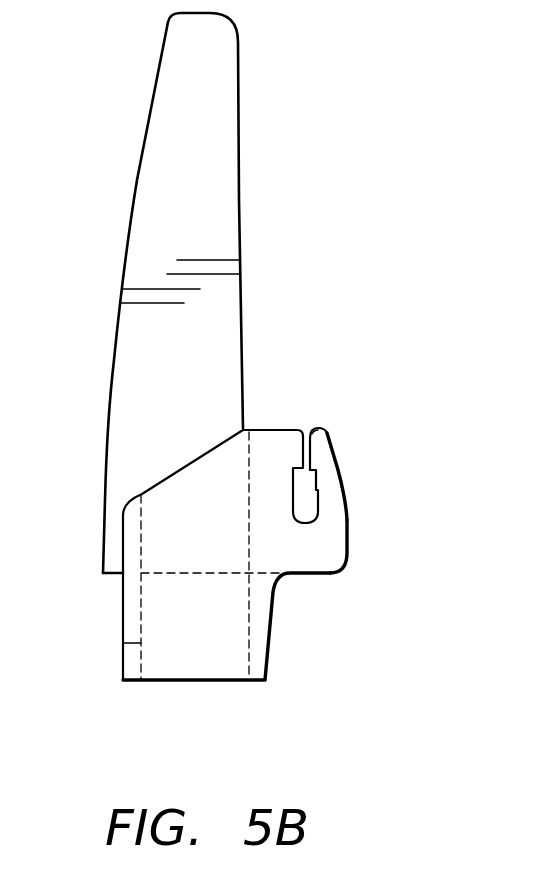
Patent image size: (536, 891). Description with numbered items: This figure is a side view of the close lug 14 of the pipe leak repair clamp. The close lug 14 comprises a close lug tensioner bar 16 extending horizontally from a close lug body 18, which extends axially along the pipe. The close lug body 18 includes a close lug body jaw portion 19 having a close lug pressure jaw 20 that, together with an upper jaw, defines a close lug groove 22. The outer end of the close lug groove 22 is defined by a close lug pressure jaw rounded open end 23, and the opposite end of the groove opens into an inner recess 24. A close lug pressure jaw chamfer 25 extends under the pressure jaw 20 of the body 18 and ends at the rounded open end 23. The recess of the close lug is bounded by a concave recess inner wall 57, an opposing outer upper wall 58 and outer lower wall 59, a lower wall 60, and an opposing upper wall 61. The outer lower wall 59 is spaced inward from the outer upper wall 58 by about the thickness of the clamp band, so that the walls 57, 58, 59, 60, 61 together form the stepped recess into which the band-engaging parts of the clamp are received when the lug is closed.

The close lug 14 is at (92, 427).
The close lug tensioner bar 16 is at (172, 148).
The close lug body 18 is at (327, 574).
The close lug body jaw portion 19 is at (283, 445).
The close lug pressure jaw 20 is at (322, 446).
The close lug groove 22 is at (313, 458).
The close lug pressure jaw rounded open end 23 is at (319, 440).
The inner recess 24 is at (292, 489).
The close lug pressure jaw chamfer 25 is at (333, 450).
The concave recess inner wall 57 is at (306, 527).
The outer upper wall 58 is at (278, 487).
The outer lower wall 59 is at (320, 497).
The lower wall 60 is at (320, 508).
The upper wall 61 is at (290, 505).